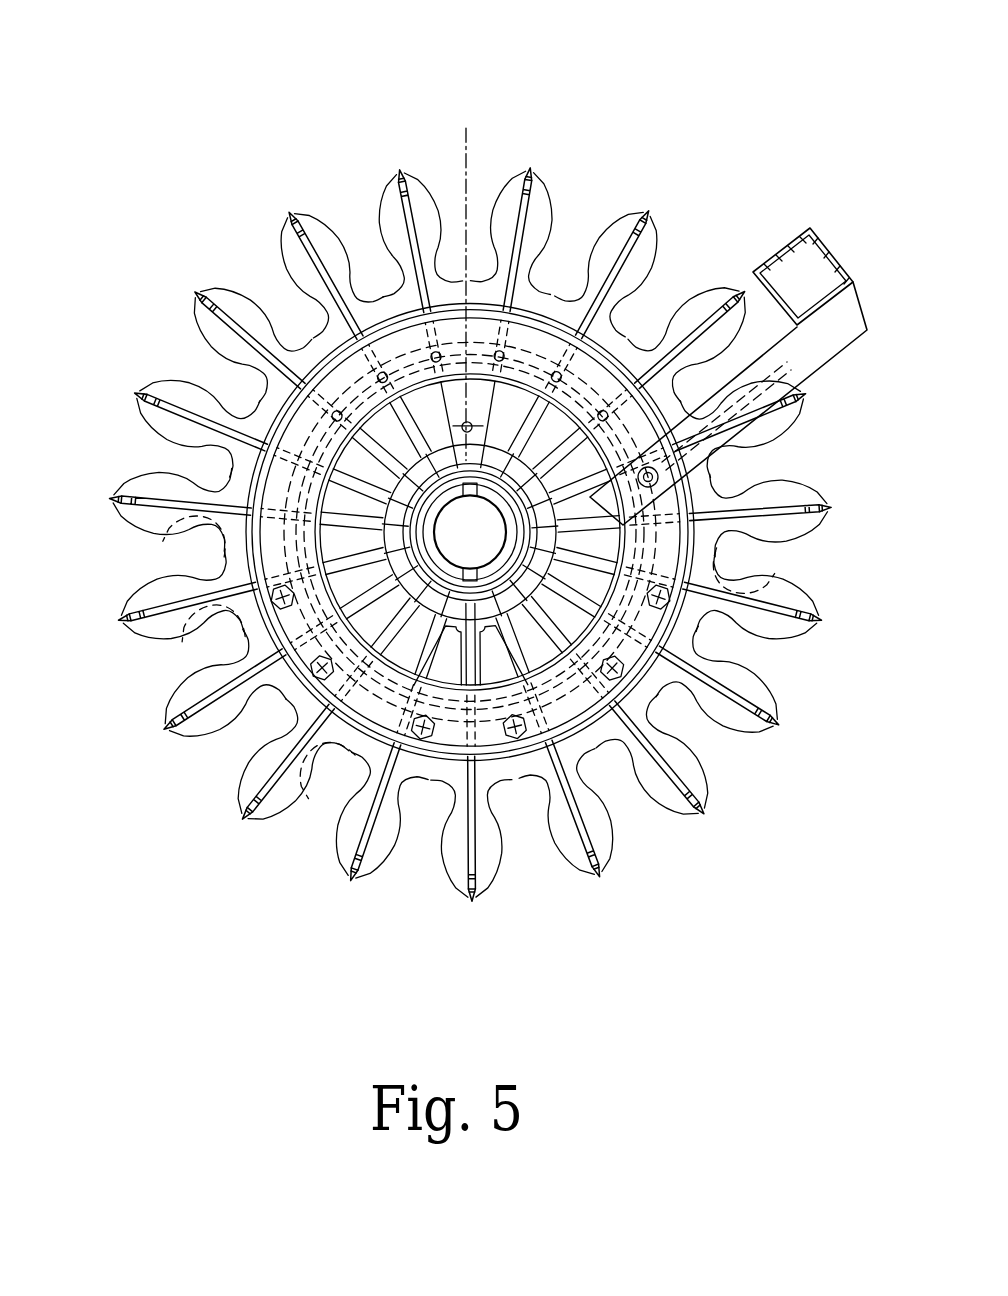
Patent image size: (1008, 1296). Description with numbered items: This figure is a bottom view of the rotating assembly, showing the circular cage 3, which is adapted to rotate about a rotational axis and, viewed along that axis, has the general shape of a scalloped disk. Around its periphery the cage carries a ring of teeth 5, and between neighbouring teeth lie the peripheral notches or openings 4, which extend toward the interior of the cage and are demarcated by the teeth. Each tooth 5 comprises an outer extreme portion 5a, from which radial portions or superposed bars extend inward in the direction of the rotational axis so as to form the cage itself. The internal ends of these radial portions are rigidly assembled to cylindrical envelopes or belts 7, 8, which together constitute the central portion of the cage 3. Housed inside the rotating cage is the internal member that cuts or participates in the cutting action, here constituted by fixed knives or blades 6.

The circular cage 3 is at (499, 112).
The peripheral notches or openings 4 is at (382, 285).
The teeth 5 is at (541, 233).
The extreme portion 5a is at (534, 176).
The fixed knives or blades 6 is at (778, 566).
The cylindrical envelope or belt 7 is at (297, 494).
The cylindrical envelope or belt 8 is at (243, 485).